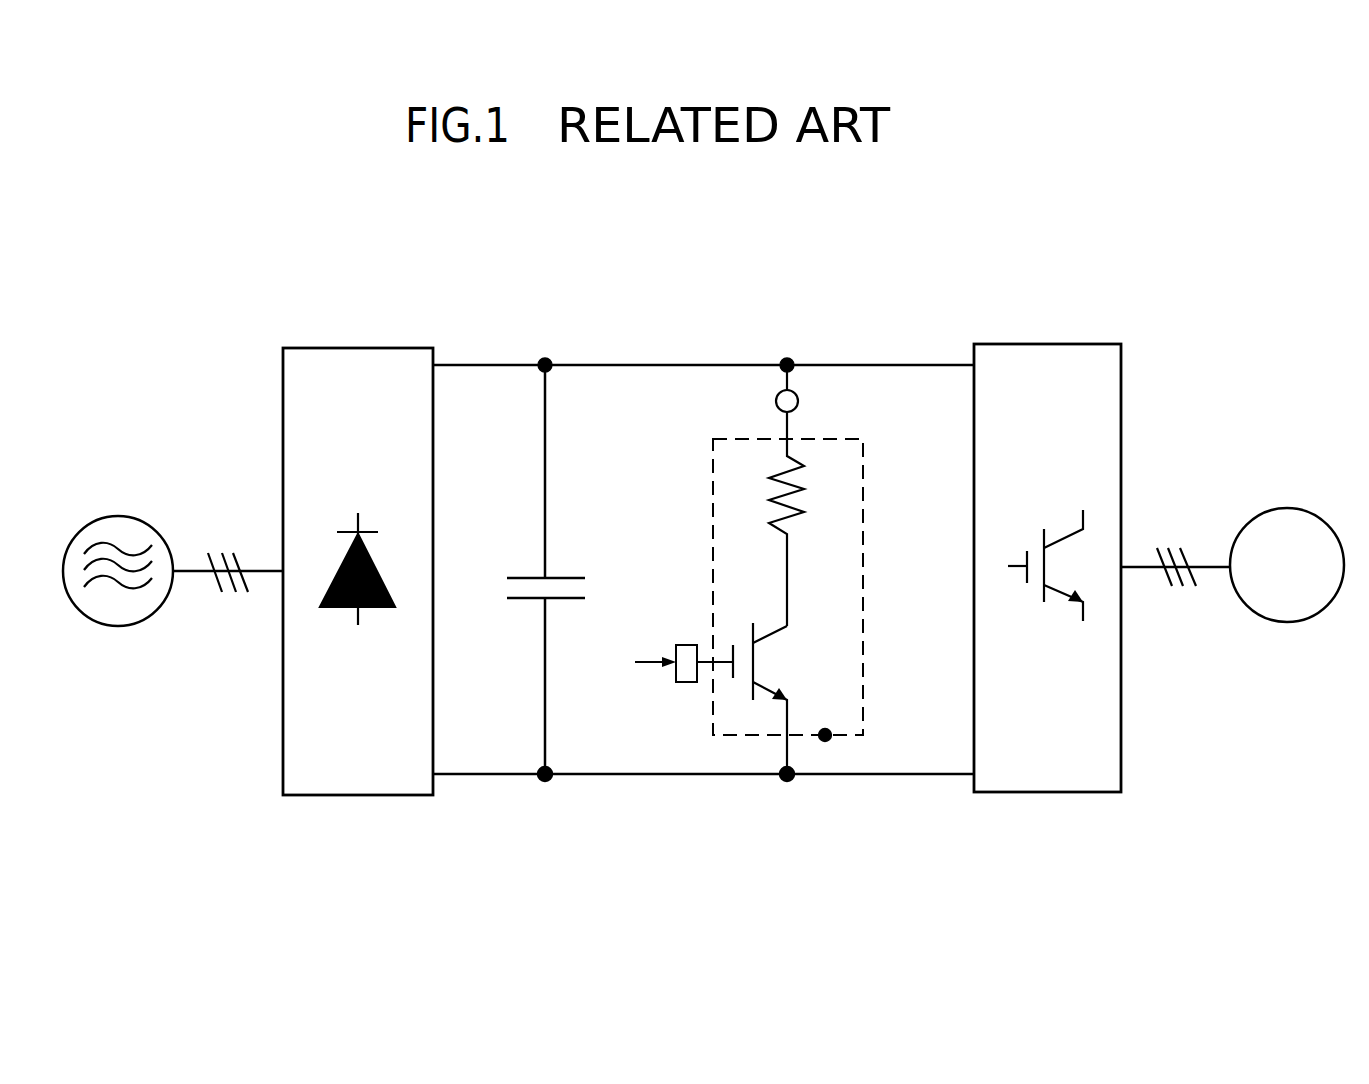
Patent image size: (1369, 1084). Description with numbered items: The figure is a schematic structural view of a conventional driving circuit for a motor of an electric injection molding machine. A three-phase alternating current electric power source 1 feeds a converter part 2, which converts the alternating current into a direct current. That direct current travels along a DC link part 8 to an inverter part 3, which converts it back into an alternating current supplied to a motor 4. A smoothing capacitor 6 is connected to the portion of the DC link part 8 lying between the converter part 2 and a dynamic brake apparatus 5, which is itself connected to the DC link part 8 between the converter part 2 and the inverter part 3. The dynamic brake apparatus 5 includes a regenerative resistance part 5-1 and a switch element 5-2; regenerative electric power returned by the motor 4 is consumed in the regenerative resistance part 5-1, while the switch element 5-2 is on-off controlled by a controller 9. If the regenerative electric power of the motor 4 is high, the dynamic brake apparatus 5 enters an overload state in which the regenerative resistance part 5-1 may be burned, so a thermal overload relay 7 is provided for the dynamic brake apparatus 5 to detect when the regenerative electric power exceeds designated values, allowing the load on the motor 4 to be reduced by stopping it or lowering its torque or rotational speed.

The three-phase alternating current electric power source 1 is at (120, 627).
The converter part 2 is at (358, 348).
The inverter part 3 is at (1046, 344).
The motor 4 is at (1290, 622).
The dynamic brake apparatus 5 is at (825, 741).
The regenerative resistance part 5-1 is at (811, 510).
The switch element 5-2 is at (789, 658).
The smoothing capacitor 6 is at (529, 576).
The thermal overload relay 7 is at (798, 399).
The DC link part 8 is at (593, 363).
The controller 9 is at (683, 645).